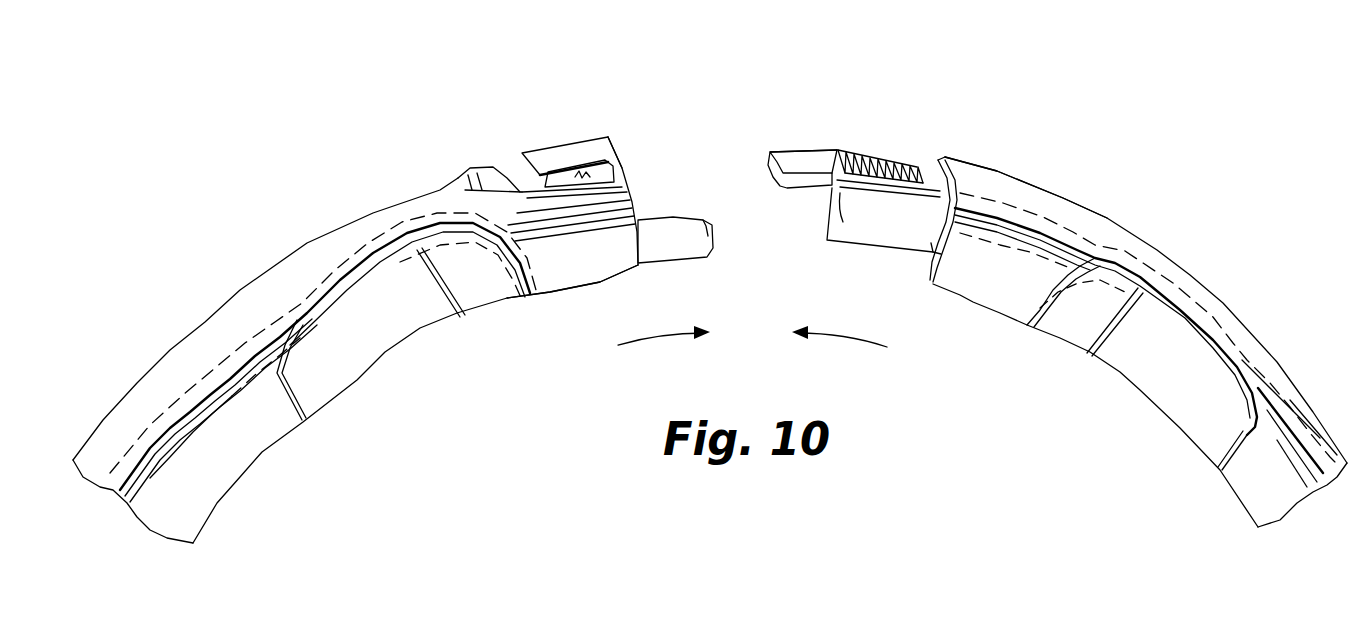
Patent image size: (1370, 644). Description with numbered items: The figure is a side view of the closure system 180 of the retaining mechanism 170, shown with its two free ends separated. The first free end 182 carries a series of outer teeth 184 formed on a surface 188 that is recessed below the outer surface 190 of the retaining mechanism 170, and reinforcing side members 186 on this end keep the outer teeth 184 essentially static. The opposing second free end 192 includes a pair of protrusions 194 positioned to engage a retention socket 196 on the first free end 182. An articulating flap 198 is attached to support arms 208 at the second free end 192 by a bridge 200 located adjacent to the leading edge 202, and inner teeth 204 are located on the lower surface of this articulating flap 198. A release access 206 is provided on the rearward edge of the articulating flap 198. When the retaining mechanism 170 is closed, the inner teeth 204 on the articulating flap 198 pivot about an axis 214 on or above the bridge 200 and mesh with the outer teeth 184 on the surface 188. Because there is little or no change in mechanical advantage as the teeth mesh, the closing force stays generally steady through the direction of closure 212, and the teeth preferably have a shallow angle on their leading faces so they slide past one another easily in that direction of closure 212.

The retaining mechanism 170 is at (1003, 137).
The closure system 180 is at (727, 96).
The first free end 182 is at (820, 142).
The outer teeth 184 is at (903, 160).
The reinforcing side members 186 is at (840, 223).
The surface 188 is at (930, 170).
The outer surface 190 is at (1020, 188).
The second free end 192 is at (553, 304).
The protrusions 194 is at (670, 250).
The retention socket 196 is at (937, 253).
The articulating flap 198 is at (540, 155).
The bridge 200 is at (622, 168).
The leading edge 202 is at (635, 208).
The inner teeth 204 is at (581, 176).
The release access 206 is at (504, 150).
The support arms 208 is at (600, 238).
The direction of closure 212 is at (653, 338).
The axis 214 is at (630, 177).